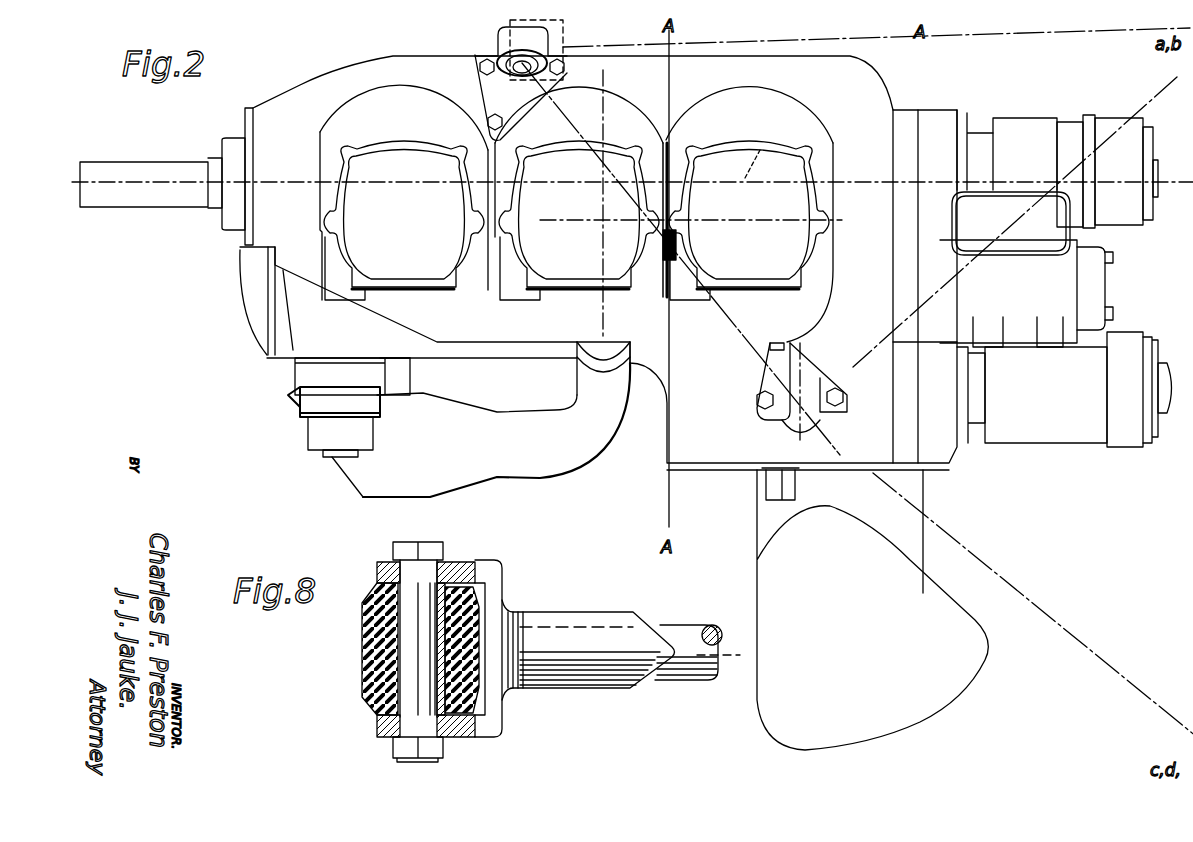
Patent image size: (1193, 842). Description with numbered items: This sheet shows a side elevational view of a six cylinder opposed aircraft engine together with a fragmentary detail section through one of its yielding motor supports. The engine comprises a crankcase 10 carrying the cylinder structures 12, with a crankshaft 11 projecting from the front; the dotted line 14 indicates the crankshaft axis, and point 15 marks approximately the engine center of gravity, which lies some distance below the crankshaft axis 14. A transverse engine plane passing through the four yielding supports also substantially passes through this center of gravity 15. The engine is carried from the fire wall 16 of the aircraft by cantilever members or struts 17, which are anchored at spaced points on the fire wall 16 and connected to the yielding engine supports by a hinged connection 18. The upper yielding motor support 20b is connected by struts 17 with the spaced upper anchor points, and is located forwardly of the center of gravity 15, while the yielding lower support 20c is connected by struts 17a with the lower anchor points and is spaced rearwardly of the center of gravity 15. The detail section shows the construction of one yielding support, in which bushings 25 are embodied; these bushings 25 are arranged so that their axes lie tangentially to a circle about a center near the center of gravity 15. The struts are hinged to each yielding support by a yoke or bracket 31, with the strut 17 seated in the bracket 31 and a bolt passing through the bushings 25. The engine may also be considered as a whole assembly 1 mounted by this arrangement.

In FIG. 2, the drive axis line 1 is at (1167, 97).
In FIG. 2, the crankcase 10 is at (297, 349).
In FIG. 2, the crankshaft 11 is at (150, 170).
In FIG. 2, the cylinder structures 12 is at (576, 213).
In FIG. 2, the crankshaft axis 14 is at (760, 150).
In FIG. 2, the engine center of gravity 15 is at (645, 220).
In FIG. 2, the fire wall 16 is at (1192, 503).
In FIG. 2, the struts or cantilever members 17 is at (876, 44).
In FIG. 8, the struts or cantilever members 17 is at (643, 643).
In FIG. 2, the struts 17a is at (1003, 578).
In FIG. 8, the hinged connection 18 is at (474, 558).
In FIG. 2, the yielding motor support 20b is at (493, 33).
In FIG. 2, the yielding lower support 20c is at (758, 403).
In FIG. 8, the bushings 25 is at (362, 661).
In FIG. 8, the yoke or bracket 31 is at (513, 590).